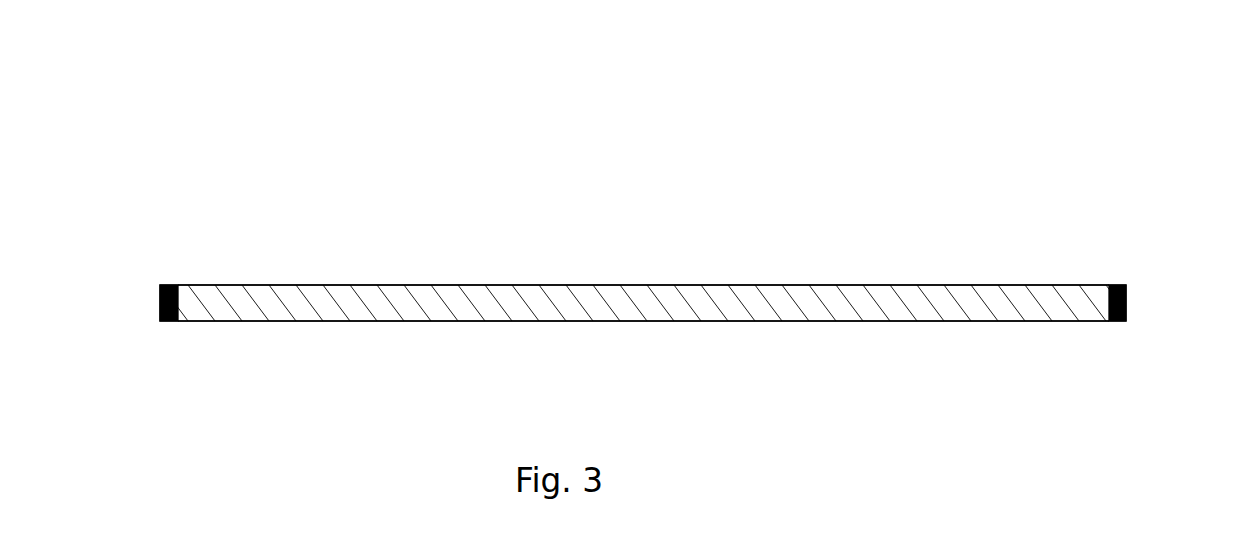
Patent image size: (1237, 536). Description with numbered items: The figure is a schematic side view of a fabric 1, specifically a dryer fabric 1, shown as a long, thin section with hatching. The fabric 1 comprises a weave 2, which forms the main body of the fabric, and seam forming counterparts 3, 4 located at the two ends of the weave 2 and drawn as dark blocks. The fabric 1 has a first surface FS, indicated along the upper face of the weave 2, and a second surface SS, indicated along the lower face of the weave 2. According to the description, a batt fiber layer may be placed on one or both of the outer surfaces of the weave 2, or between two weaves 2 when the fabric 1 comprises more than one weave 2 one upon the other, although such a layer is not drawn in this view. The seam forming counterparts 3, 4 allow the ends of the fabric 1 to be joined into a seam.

The fabric 1 is at (644, 280).
The weave 2 is at (560, 298).
The seam forming counterpart 3 is at (160, 288).
The seam forming counterpart 4 is at (1127, 295).
The first surface FS is at (808, 285).
The second surface SS is at (440, 322).